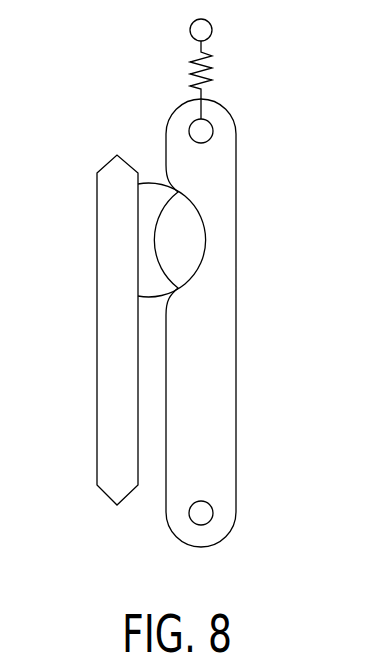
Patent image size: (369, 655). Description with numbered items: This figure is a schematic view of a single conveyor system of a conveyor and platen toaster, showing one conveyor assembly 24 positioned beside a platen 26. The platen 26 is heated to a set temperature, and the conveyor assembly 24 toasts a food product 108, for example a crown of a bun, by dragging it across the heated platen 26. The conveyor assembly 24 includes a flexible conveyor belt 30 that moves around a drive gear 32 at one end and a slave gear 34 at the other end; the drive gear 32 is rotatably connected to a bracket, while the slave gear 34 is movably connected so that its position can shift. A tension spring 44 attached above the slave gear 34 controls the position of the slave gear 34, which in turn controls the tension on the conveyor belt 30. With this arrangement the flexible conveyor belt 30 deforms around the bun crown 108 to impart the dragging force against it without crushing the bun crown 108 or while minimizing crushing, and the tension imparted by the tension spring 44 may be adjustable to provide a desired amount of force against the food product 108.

The conveyor assembly 24 is at (249, 191).
The platen 26 is at (97, 212).
The conveyor belt 30 is at (237, 254).
The drive gear 32 is at (203, 515).
The slave gear 34 is at (203, 130).
The tension spring 44 is at (206, 62).
The food product 108 is at (185, 251).